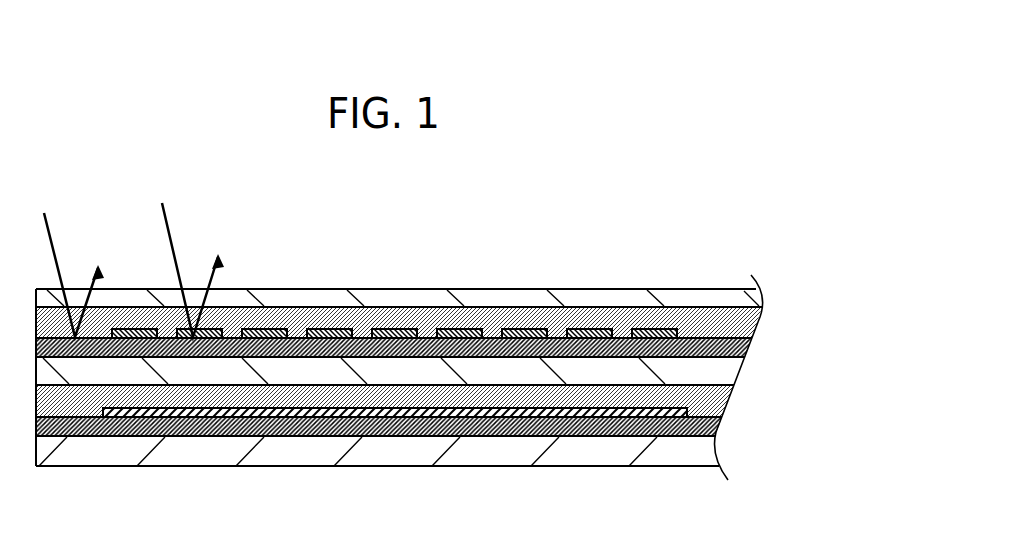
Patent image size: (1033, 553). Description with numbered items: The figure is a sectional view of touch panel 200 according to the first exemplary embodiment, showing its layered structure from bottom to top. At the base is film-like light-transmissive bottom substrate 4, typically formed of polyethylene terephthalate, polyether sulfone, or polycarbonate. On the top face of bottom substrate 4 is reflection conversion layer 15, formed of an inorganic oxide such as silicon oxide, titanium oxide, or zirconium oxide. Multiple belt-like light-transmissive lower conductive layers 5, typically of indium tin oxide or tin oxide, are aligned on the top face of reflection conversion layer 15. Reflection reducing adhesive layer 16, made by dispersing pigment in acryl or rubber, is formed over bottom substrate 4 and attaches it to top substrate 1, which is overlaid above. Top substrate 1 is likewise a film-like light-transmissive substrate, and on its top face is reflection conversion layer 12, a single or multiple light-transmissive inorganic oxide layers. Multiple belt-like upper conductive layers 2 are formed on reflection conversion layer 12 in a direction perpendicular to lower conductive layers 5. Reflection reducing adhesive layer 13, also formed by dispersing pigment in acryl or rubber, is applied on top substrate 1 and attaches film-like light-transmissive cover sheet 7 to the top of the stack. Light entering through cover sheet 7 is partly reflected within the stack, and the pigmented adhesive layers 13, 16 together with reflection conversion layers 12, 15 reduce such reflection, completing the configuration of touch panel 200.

The touch panel 200 is at (607, 175).
The cover sheet 7 is at (487, 300).
The upper conductive layers 2 is at (652, 332).
The reflection reducing adhesive layer 13 is at (695, 317).
The reflection conversion layer 12 is at (720, 342).
The top substrate 1 is at (720, 373).
The reflection reducing adhesive layer 16 is at (710, 400).
The lower conductive layers 5 is at (315, 412).
The reflection conversion layer 15 is at (490, 428).
The bottom substrate 4 is at (682, 452).